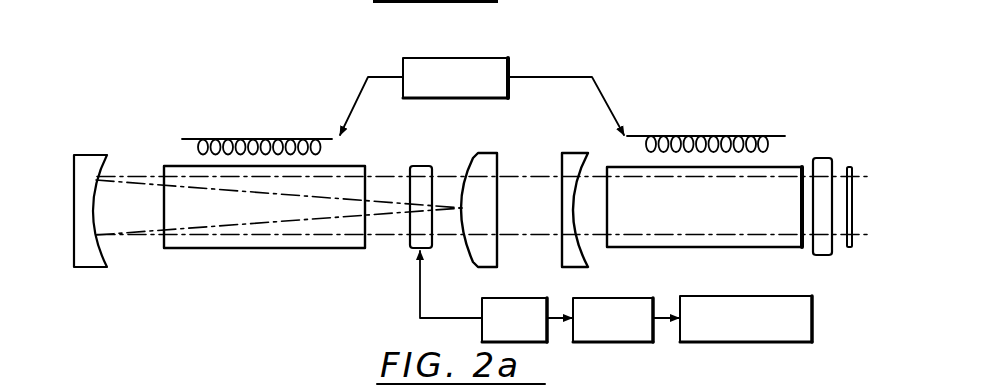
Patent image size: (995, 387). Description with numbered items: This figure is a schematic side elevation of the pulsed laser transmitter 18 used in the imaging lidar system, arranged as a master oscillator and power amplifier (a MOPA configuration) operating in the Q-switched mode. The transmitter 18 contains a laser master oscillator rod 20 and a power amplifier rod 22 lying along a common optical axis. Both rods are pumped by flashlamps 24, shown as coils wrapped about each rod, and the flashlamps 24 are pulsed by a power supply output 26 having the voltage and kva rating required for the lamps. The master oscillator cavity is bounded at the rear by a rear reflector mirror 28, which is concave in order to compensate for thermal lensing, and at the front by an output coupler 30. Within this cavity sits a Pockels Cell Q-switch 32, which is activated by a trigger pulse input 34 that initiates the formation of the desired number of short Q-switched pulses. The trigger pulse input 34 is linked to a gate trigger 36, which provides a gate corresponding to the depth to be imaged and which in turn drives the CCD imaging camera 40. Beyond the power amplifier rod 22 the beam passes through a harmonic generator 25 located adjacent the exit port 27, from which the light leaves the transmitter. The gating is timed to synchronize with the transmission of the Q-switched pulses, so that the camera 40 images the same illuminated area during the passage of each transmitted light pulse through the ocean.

The pulsed laser transmitter 18 is at (563, 67).
The laser master oscillator rod 20 is at (245, 250).
The power amplifier rod 22 is at (700, 248).
The flashlamps 24 is at (260, 139).
The harmonic generator 25 is at (820, 158).
The power supply output 26 is at (467, 98).
The exit port 27 is at (849, 248).
The rear reflector mirror 28 is at (92, 155).
The output coupler 30 is at (483, 152).
The Pockels Cell Q-switch 32 is at (417, 165).
The trigger pulse input 34 is at (498, 298).
The gate trigger 36 is at (598, 298).
The CCD imaging camera 40 is at (722, 296).